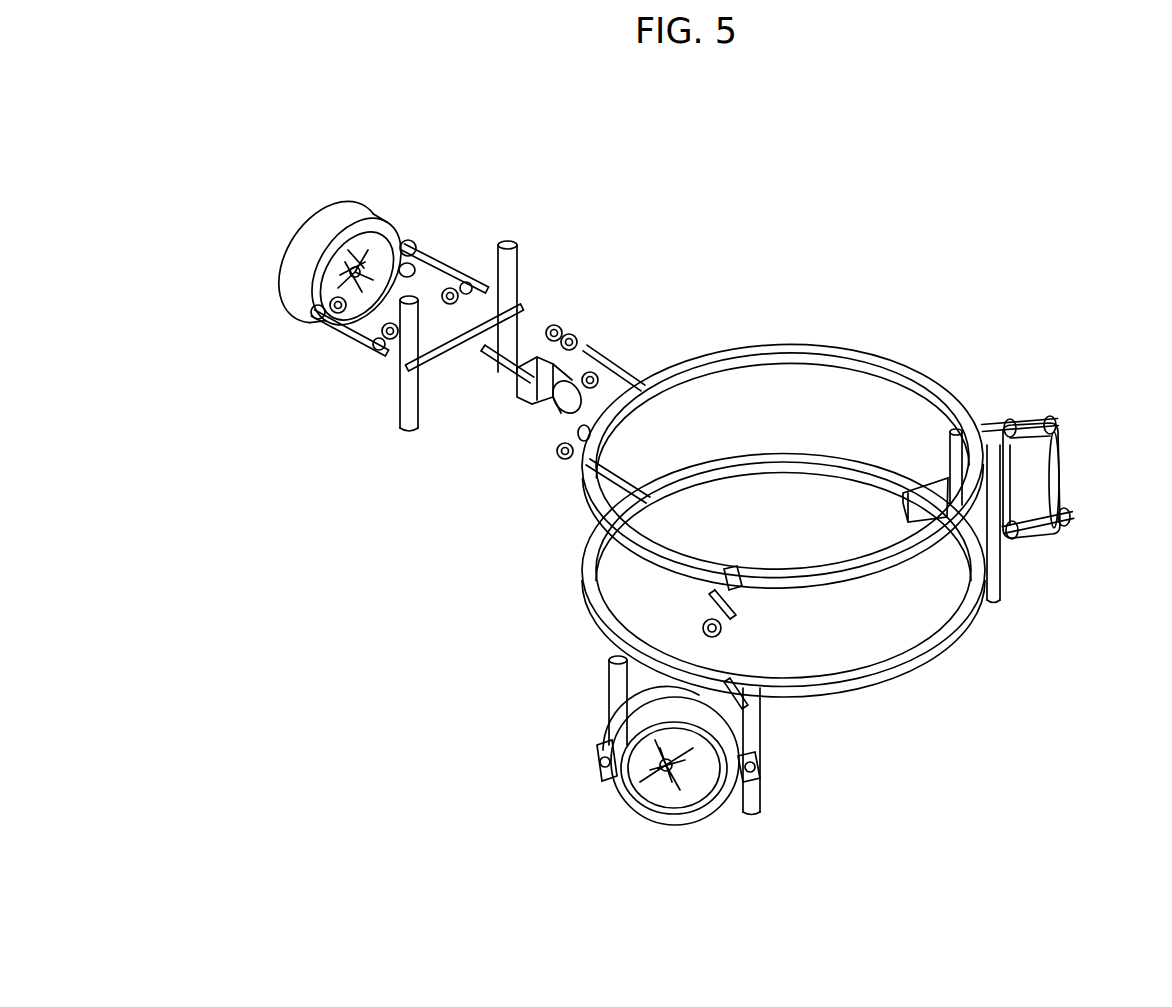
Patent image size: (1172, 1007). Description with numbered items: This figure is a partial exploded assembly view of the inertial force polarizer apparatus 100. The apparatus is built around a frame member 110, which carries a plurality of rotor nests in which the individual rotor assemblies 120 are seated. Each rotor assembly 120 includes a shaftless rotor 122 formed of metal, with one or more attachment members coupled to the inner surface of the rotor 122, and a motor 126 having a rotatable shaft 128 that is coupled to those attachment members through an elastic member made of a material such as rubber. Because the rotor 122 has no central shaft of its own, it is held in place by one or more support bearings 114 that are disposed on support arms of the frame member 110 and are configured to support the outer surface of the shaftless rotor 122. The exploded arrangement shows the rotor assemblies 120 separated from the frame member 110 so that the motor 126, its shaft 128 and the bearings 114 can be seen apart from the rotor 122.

The inertial force polarizer apparatus 100 is at (170, 140).
The frame member 110 is at (785, 344).
The support bearings 114 is at (549, 326).
The rotor assembly 120 is at (292, 327).
The shaftless rotor 122 is at (347, 203).
The motor 126 is at (542, 402).
The rotatable shaft 128 is at (492, 358).